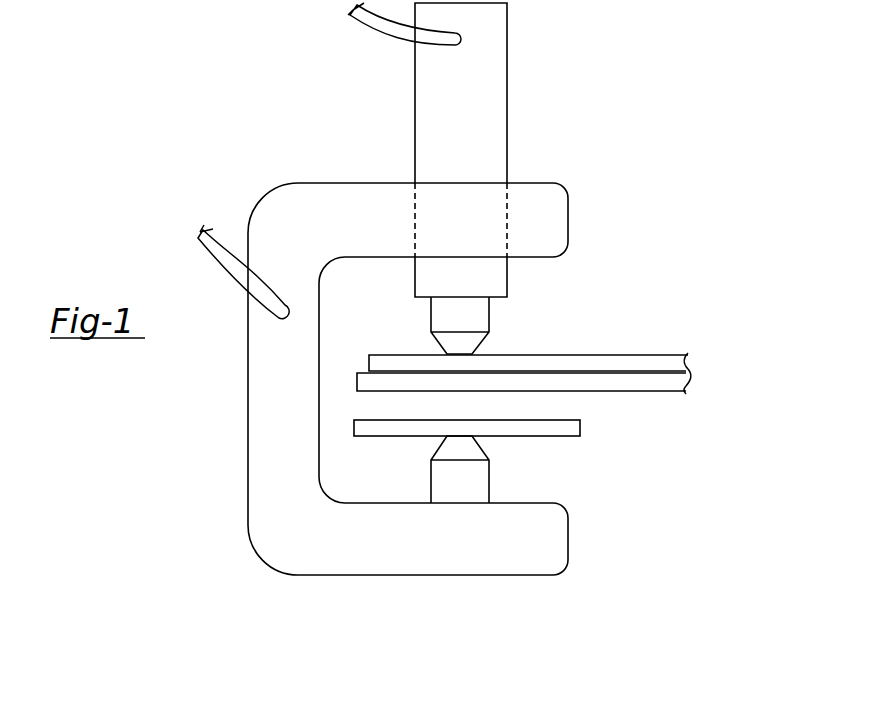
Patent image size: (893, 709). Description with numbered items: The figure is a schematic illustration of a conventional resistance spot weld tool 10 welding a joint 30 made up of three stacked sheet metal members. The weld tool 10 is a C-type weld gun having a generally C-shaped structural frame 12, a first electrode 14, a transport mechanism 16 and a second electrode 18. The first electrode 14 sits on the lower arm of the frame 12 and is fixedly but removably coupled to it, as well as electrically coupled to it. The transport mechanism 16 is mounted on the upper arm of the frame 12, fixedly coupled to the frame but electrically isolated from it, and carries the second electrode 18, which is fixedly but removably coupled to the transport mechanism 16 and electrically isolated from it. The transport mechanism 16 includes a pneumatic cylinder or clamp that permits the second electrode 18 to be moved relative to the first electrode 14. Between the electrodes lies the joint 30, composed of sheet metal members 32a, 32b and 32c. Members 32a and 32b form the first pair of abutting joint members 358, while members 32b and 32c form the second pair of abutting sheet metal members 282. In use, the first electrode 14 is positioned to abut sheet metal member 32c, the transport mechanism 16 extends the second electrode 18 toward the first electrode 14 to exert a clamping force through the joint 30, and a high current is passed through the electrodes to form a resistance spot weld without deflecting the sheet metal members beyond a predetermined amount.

The weld tool 10 is at (207, 527).
The structural frame 12 is at (362, 540).
The first electrode 14 is at (475, 472).
The transport mechanism 16 is at (487, 113).
The second electrode 18 is at (480, 280).
The joint 30 is at (595, 329).
The sheet metal member 32a is at (622, 363).
The sheet metal member 32b is at (660, 385).
The sheet metal member 32c is at (572, 424).
The second pair of abutting sheet metal members 282 is at (343, 372).
The first pair of abutting joint members 358 is at (707, 353).